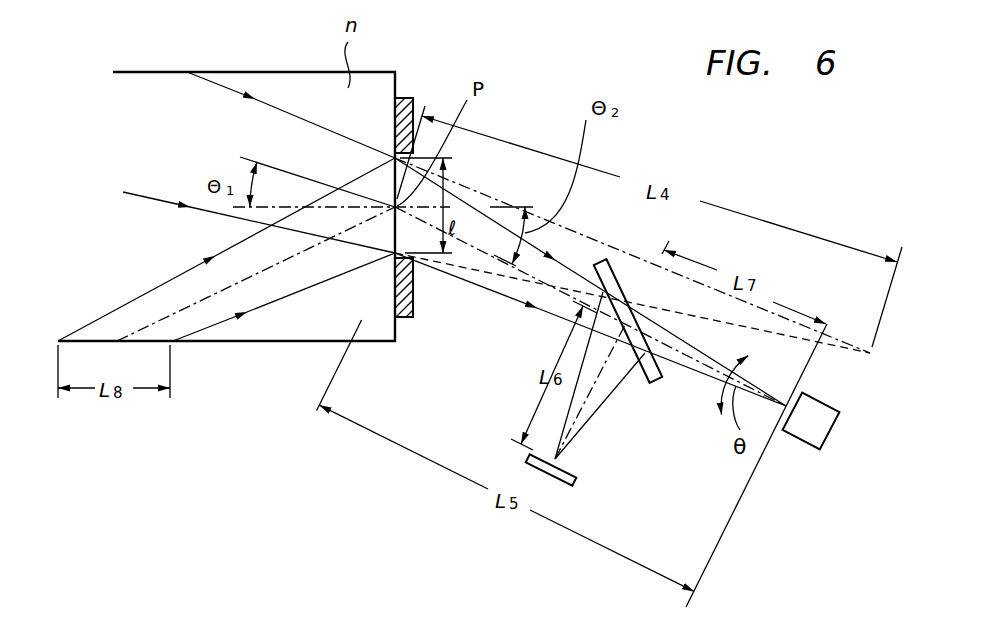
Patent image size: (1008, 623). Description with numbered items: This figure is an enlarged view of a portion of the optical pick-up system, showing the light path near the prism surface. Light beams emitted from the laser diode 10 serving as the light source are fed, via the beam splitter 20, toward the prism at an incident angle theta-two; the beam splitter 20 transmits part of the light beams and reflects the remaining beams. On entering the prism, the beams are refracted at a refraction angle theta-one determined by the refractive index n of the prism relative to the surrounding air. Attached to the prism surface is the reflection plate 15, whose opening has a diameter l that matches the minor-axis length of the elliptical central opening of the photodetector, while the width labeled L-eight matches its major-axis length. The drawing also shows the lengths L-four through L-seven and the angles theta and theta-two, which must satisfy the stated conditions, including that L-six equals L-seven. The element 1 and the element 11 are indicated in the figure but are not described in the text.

The optical block / prism 1 is at (283, 330).
The laser diode 10 is at (807, 448).
The light source 11 is at (577, 482).
The reflection plate 15 is at (407, 298).
The beam splitter 20 is at (650, 386).